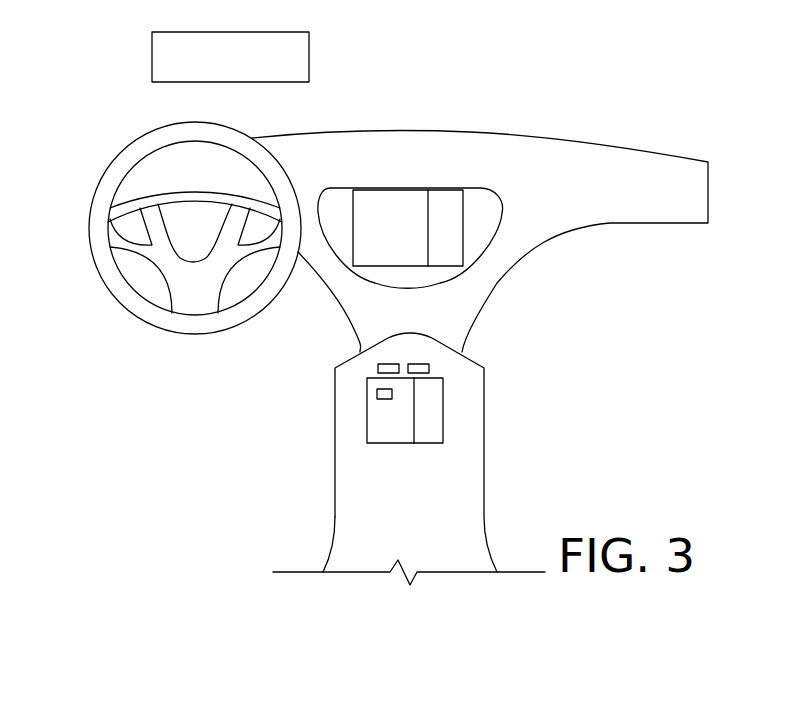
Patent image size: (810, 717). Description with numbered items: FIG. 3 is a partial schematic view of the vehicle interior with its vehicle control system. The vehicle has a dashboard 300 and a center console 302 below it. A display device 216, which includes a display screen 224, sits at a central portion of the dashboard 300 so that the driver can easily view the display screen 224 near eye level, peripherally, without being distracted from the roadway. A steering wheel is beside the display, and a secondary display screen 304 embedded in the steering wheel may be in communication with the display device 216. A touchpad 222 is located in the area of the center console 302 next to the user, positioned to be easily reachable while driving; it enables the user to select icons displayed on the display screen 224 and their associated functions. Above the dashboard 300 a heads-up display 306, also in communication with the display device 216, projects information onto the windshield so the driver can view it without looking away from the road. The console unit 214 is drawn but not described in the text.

The dashboard 300 is at (505, 133).
The center console 302 is at (470, 380).
The secondary display screen 304 is at (193, 218).
The heads-up display 306 is at (152, 53).
The display device 216 is at (381, 191).
The display screen 224 is at (397, 208).
The center console display 214 is at (394, 403).
The touchpad 222 is at (432, 420).